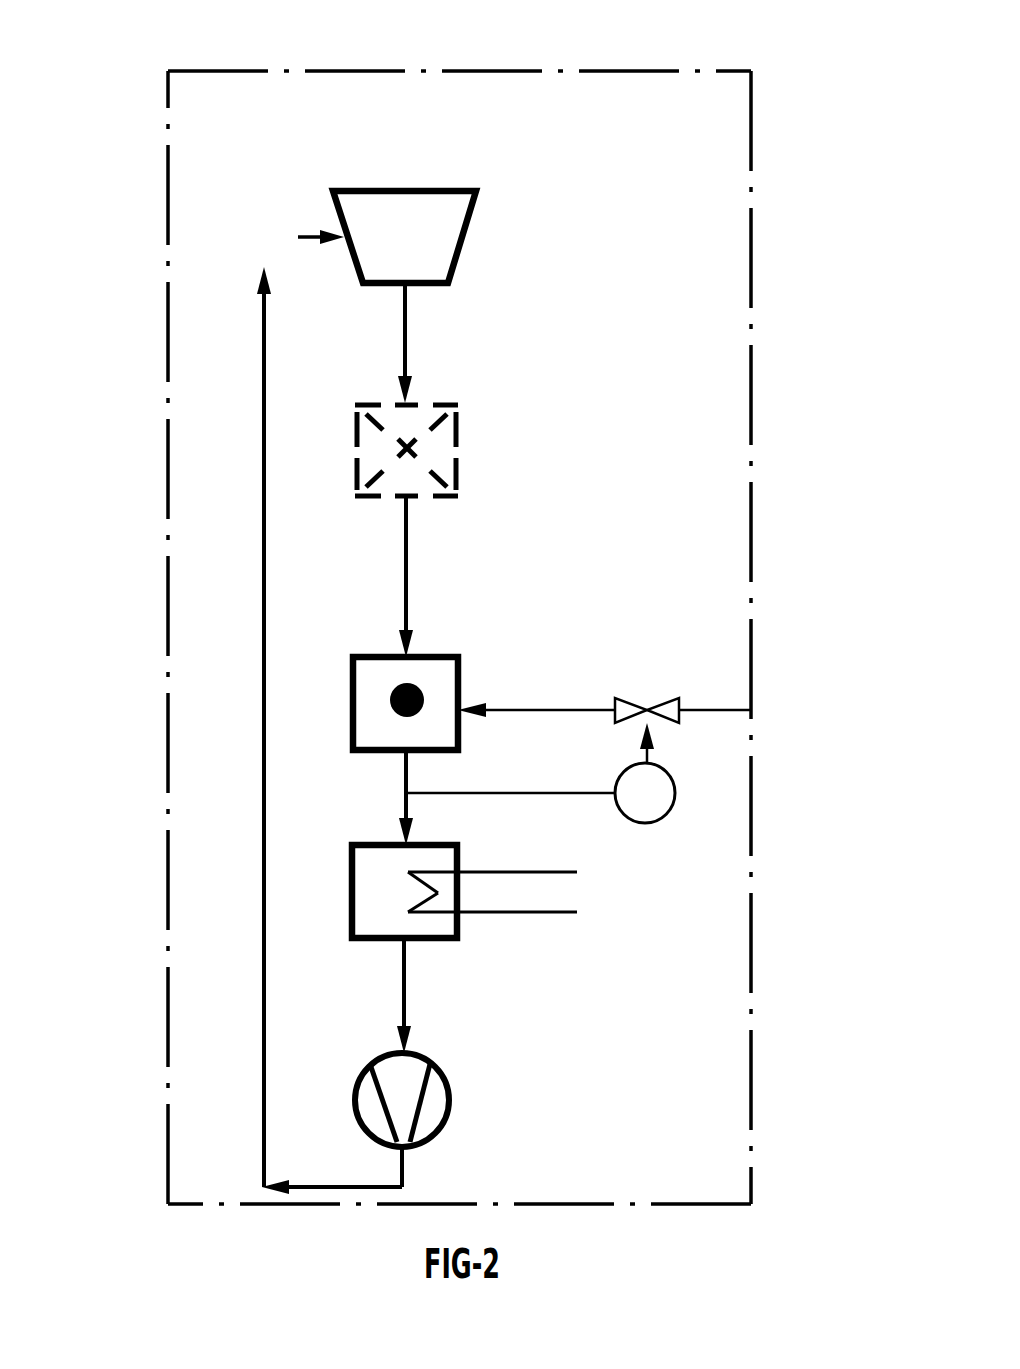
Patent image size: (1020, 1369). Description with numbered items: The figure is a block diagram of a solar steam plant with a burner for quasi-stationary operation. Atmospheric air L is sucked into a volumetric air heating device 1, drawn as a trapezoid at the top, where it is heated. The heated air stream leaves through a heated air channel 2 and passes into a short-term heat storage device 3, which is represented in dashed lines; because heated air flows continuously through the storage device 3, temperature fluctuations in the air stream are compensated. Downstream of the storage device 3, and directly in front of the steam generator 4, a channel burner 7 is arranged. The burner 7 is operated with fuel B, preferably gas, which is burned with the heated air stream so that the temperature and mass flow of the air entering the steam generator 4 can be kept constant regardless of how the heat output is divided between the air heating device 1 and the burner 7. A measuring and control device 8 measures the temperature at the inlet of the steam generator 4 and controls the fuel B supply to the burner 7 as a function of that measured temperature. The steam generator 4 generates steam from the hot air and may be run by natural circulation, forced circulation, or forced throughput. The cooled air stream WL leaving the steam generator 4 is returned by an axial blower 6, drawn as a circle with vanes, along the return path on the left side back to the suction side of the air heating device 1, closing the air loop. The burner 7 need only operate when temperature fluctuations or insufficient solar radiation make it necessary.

The volumetric air heating device 1 is at (434, 205).
The heated air channel 2 is at (407, 337).
The short-term heat storage device 3 is at (442, 452).
The burner 7 is at (438, 673).
The steam generator 4 is at (370, 873).
The axial blower 6 is at (365, 1097).
The measuring and control device 8 is at (657, 773).
The fuel B is at (712, 708).
The atmospheric air L is at (312, 235).
The cooled air stream WL is at (262, 405).